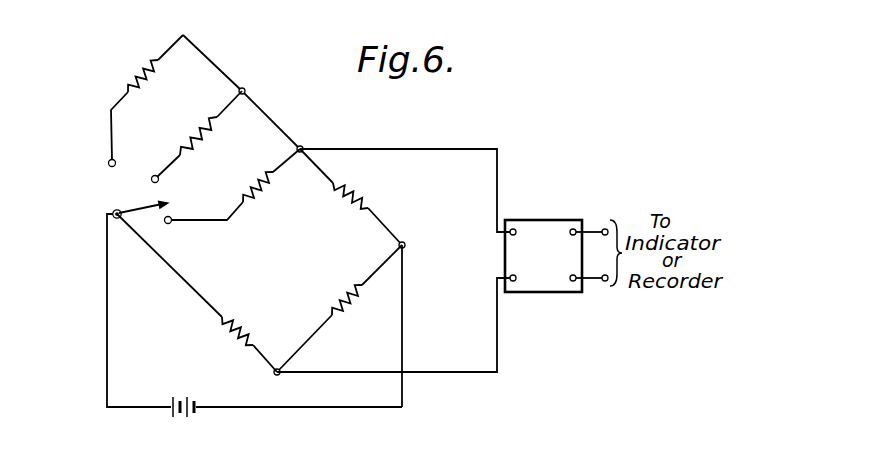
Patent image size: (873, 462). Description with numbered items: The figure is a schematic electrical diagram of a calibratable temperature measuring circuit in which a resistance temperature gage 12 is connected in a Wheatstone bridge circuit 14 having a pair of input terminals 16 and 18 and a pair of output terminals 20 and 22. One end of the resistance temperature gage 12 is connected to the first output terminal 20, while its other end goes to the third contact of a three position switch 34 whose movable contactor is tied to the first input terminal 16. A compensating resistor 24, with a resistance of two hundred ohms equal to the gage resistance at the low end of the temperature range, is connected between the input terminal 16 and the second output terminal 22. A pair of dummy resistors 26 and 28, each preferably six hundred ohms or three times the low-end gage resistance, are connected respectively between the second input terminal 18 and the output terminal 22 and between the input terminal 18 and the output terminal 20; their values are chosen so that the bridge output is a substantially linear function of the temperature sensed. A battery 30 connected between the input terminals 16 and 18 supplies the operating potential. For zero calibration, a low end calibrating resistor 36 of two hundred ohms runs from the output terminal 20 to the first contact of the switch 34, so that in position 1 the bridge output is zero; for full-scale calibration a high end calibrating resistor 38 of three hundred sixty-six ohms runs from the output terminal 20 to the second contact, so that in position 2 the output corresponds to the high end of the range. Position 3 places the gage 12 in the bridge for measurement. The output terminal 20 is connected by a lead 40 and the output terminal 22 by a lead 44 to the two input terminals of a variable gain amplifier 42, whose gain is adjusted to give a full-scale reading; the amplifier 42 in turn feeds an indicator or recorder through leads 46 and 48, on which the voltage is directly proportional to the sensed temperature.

The resistance temperature gage 12 is at (155, 53).
The third position of the switch 3 is at (121, 161).
The second position of the switch 2 is at (164, 183).
The first position of the switch 1 is at (173, 231).
The high end calibrating resistor 38 is at (209, 140).
The low end calibrating resistor 36 is at (263, 199).
The first output terminal 20 is at (302, 145).
The dummy resistor 28 is at (369, 207).
The lead 40 is at (417, 148).
The second input terminal 18 is at (405, 245).
The dummy resistor 26 is at (342, 313).
The second output terminal 22 is at (279, 374).
The lead 44 is at (432, 372).
The first input terminal 16 is at (118, 219).
The three position switch 34 is at (97, 202).
The Wheatstone bridge circuit 14 is at (170, 284).
The compensating resistor 24 is at (222, 323).
The battery 30 is at (182, 420).
The variable gain amplifier 42 is at (532, 220).
The lead 46 is at (592, 229).
The lead 48 is at (593, 281).